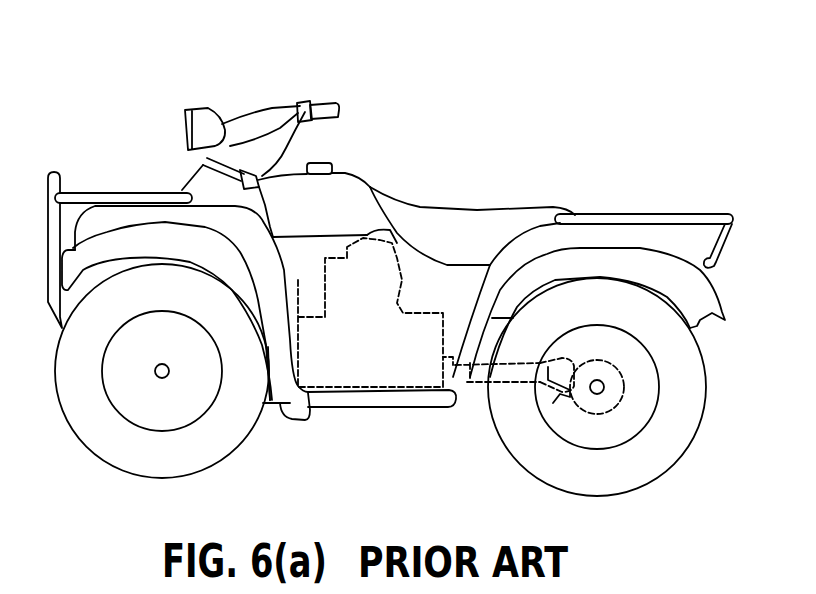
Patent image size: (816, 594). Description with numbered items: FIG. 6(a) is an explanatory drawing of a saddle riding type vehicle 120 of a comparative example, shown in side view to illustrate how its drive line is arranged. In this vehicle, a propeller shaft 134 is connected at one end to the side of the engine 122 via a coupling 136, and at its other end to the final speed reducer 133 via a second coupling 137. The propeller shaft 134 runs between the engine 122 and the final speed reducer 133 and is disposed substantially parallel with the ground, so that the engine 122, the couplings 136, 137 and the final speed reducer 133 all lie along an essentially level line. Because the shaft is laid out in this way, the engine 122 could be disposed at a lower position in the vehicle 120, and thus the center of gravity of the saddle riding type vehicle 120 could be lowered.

The saddle riding type vehicle 120 is at (193, 62).
The engine 122 is at (393, 245).
The final speed reducer 133 is at (592, 360).
The propeller shaft 134 is at (512, 357).
The coupling 136 is at (463, 387).
The coupling 137 is at (553, 403).